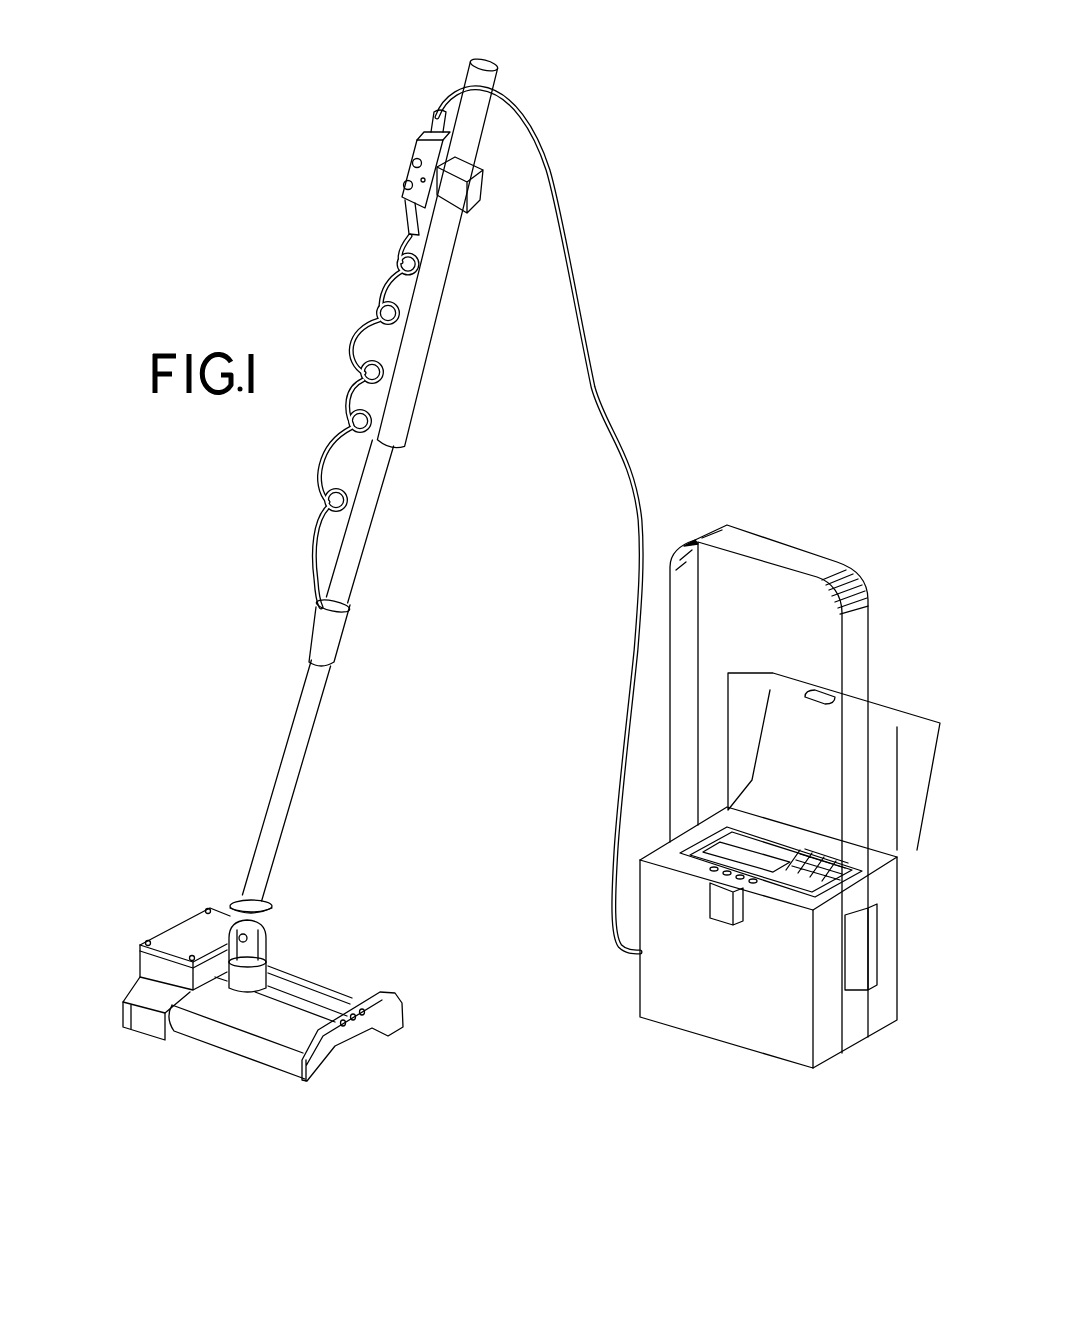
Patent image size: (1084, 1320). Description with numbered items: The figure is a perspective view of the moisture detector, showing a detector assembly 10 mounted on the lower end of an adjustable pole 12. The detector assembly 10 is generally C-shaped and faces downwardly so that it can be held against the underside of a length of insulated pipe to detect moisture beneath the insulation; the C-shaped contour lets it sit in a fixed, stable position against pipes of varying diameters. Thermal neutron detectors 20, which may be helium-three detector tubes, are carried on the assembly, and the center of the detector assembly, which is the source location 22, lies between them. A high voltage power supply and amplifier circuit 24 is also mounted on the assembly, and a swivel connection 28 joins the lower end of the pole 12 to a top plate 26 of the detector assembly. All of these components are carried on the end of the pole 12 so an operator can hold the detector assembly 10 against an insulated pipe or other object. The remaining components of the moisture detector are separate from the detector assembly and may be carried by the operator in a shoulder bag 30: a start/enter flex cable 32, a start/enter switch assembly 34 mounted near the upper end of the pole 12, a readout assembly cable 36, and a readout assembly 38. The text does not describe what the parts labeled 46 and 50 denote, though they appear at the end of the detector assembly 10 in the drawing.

The detector assembly 10 is at (316, 981).
The adjustable pole 12 is at (468, 67).
The thermal neutron detectors 20 is at (275, 1057).
The source location 22 is at (266, 1004).
The high voltage power supply and amplifier circuit 24 is at (176, 919).
The top plate 26 is at (343, 1003).
The swivel connection 28 is at (277, 938).
The shoulder bag 30 is at (785, 1070).
The start/enter flex cable 32 is at (380, 290).
The start/enter switch assembly 34 is at (405, 160).
The readout assembly cable 36 is at (530, 107).
The readout assembly 38 is at (786, 885).
The end block front 46 is at (143, 1023).
The end block 50 is at (130, 987).